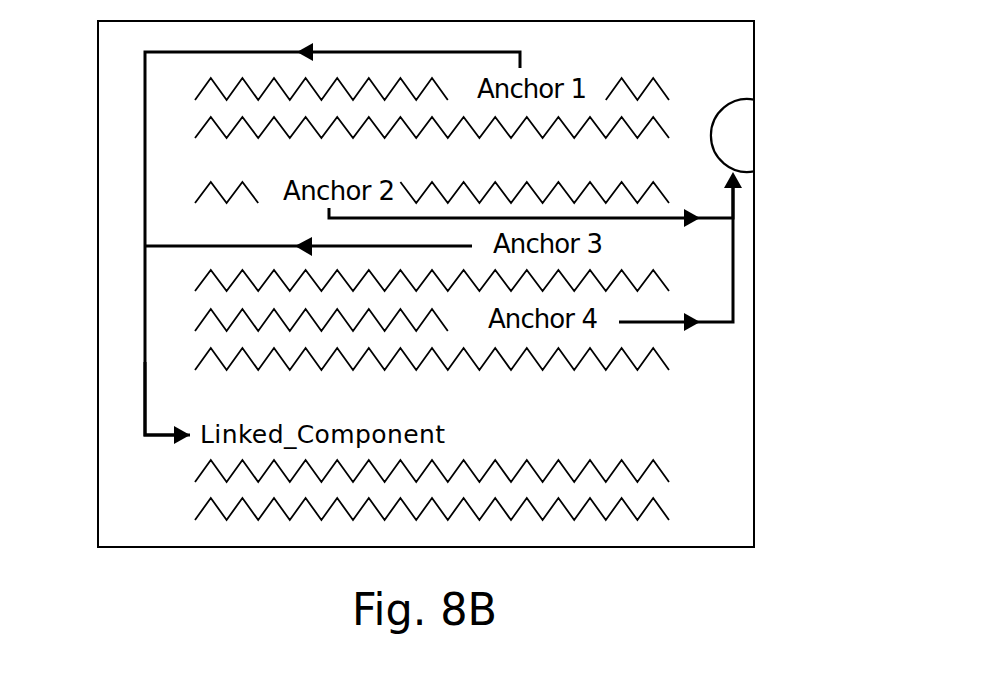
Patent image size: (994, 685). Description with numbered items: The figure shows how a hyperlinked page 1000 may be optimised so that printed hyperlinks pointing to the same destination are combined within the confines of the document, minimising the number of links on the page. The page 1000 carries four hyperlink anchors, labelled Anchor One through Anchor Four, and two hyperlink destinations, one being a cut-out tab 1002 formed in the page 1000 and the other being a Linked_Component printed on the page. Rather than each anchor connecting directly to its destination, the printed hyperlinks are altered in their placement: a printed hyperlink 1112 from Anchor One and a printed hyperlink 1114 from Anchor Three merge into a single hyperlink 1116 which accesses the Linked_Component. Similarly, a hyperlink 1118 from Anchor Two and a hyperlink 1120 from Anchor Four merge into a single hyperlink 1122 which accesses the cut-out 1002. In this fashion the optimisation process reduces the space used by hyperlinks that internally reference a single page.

The hyperlinked page 1000 is at (755, 67).
The cut-out tab 1002 is at (738, 138).
The printed hyperlink from Anchor 1 1112 is at (145, 138).
The printed hyperlink from Anchor 3 1114 is at (182, 247).
The merged hyperlink to Linked_Component 1116 is at (145, 362).
The hyperlink from Anchor 2 1118 is at (653, 220).
The hyperlink from Anchor 4 1120 is at (733, 305).
The merged hyperlink to cut-out 1122 is at (733, 202).